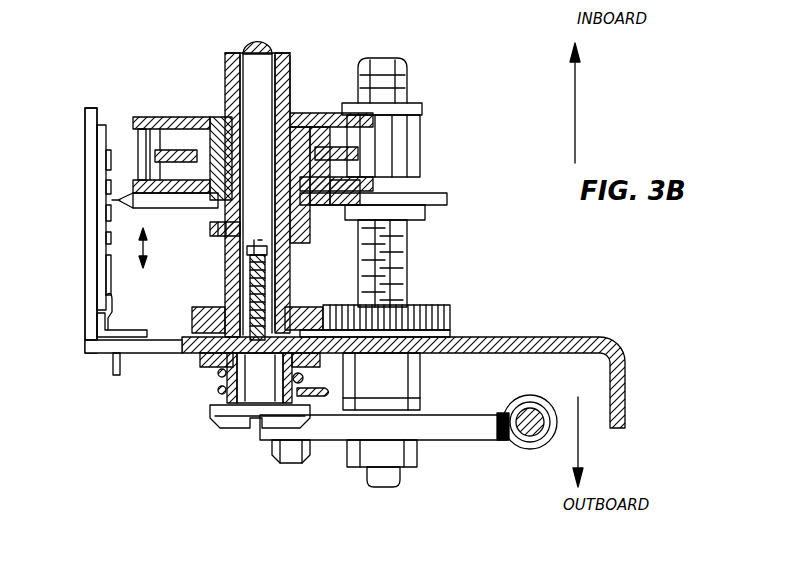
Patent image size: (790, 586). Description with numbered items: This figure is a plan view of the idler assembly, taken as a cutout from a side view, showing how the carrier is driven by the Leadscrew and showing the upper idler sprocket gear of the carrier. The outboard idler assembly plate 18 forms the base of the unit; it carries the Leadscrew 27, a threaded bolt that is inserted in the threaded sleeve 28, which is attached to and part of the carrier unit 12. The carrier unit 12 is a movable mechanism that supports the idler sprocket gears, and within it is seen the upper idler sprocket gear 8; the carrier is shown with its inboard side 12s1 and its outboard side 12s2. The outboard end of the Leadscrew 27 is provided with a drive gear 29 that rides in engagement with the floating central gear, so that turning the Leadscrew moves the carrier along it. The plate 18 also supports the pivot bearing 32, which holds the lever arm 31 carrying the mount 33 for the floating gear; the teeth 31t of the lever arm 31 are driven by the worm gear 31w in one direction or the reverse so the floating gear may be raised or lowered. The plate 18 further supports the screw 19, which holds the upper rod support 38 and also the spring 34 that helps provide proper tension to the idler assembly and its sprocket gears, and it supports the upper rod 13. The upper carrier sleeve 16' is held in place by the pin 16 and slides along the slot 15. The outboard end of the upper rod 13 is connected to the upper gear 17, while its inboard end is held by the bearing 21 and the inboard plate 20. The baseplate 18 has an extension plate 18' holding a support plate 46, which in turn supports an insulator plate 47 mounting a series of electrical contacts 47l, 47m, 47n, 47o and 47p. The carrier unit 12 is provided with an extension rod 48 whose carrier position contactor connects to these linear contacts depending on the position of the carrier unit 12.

The upper idler sprocket gear 8 is at (193, 160).
The carrier unit 12 is at (298, 114).
The inboard side of carrier unit 12s1 is at (177, 117).
The outboard side of carrier unit 12s2 is at (198, 308).
The upper rod 13 is at (218, 98).
The slot 15 is at (216, 100).
The pin 16 is at (233, 290).
The upper carrier sleeve 16' is at (211, 231).
The upper gear 17 is at (148, 358).
The outboard idler assembly plate 18 is at (403, 360).
The extension plate 18' is at (120, 262).
The screw 19 is at (213, 425).
The inboard plate 20 is at (273, 52).
The bearing 21 is at (294, 62).
The Leadscrew 27 is at (393, 58).
The threaded sleeve 28 is at (407, 138).
The drive gear 29 is at (444, 308).
The lever arm 31 is at (461, 422).
The teeth of lever arm 31t is at (503, 438).
The worm gear 31w is at (551, 438).
The pivot bearing 32 is at (415, 468).
The mount 33 is at (272, 452).
The spring 34 is at (215, 393).
The upper rod support 38 is at (255, 70).
The support plate 46 is at (92, 107).
The insulator plate 47 is at (104, 124).
The electrical contact 47p is at (110, 155).
The electrical contact 47o is at (108, 188).
The electrical contact 47n is at (108, 213).
The electrical contact 47m is at (107, 238).
The electrical contact 47l is at (112, 273).
The extension rod 48 is at (107, 238).